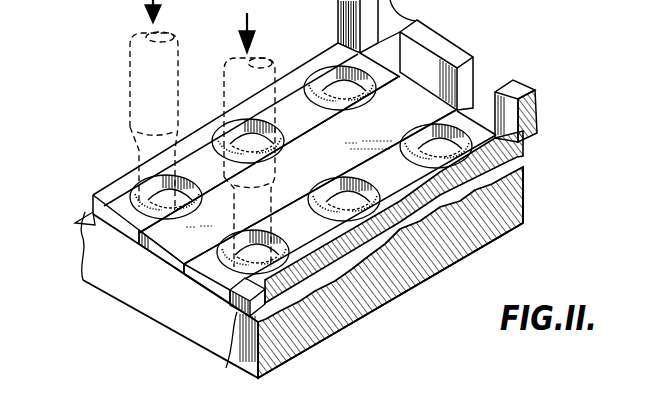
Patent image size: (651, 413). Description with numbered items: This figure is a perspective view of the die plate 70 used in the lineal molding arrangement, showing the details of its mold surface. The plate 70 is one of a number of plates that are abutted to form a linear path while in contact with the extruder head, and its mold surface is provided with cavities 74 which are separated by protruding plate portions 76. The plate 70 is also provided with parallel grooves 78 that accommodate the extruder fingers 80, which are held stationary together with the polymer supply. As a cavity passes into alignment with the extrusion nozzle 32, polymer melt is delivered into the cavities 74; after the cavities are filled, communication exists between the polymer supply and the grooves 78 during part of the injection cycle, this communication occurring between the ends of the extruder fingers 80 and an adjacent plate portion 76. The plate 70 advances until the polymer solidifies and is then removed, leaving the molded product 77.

The extrusion nozzle 32 is at (181, 44).
The plate 70 is at (215, 323).
The cavities 74 is at (318, 341).
The protruding plate portions 76 is at (212, 276).
The molded product 77 is at (163, 240).
The parallel grooves 78 is at (95, 234).
The extruder fingers 80 is at (517, 87).